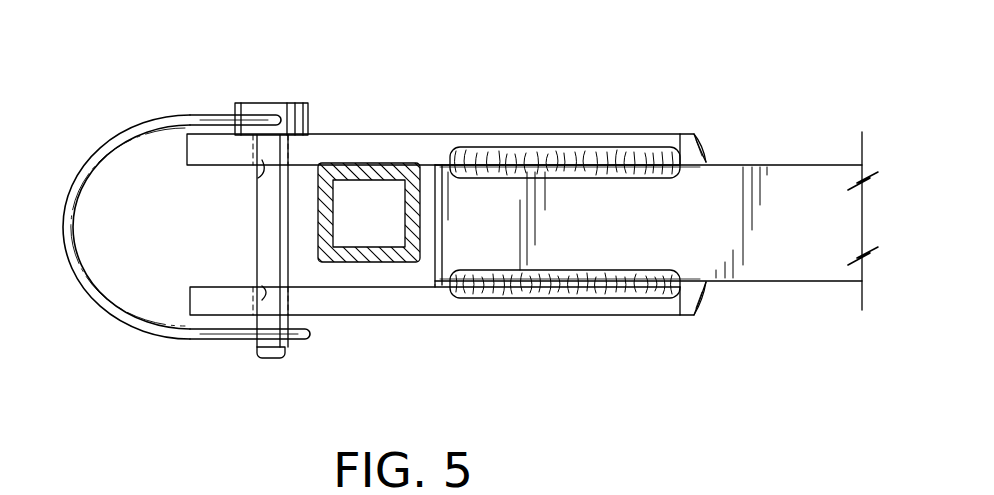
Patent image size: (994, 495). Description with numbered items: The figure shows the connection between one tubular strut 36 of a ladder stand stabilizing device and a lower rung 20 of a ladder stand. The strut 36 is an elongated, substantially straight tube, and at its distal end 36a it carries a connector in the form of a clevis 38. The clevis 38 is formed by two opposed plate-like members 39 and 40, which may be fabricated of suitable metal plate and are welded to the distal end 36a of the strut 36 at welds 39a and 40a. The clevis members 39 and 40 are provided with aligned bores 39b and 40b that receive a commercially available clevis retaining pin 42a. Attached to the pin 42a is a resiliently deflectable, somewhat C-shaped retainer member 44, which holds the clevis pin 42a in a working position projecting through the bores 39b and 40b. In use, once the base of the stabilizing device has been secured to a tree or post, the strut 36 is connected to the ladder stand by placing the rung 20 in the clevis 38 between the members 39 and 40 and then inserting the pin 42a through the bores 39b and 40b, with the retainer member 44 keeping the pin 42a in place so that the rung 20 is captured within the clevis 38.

The rung 20 is at (363, 263).
The tubular strut 36 is at (815, 282).
The distal end 36a is at (424, 286).
The clevis 38 is at (640, 132).
The plate-like member 39 is at (433, 133).
The weld 39a is at (520, 163).
The bore 39b is at (258, 158).
The plate-like member 40 is at (487, 318).
The weld 40a is at (602, 293).
The bore 40b is at (258, 300).
The clevis retaining pin 42a is at (292, 180).
The retainer member 44 is at (140, 335).